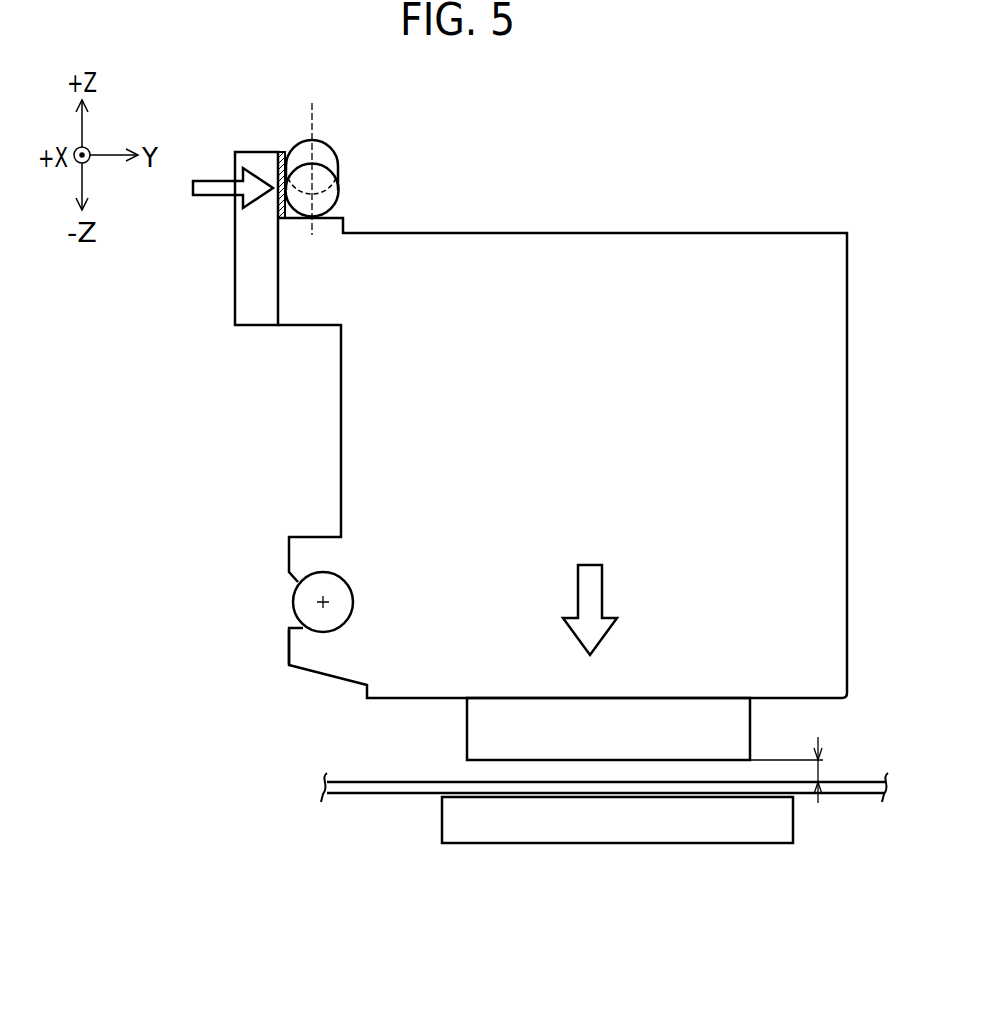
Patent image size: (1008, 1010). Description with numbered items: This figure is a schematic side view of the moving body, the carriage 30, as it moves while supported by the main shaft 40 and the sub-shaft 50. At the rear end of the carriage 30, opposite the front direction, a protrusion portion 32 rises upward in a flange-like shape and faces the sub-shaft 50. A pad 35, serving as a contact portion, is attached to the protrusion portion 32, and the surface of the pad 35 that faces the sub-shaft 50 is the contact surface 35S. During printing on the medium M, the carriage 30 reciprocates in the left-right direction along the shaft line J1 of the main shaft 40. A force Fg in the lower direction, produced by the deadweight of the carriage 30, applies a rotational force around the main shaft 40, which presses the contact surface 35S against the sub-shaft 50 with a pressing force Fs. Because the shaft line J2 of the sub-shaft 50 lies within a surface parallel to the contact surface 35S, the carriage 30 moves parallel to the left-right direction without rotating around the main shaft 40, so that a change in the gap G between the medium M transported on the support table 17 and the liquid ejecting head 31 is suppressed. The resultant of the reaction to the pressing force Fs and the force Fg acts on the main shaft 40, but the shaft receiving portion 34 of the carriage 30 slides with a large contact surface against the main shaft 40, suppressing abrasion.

The support table 17 is at (633, 843).
The carriage 30 is at (622, 240).
The liquid ejecting head 31 is at (751, 721).
The protrusion portion 32 is at (252, 216).
The shaft receiving portion 34 is at (297, 647).
The pad 35 is at (281, 153).
The contact surface 35S is at (287, 158).
The main shaft 40 is at (296, 594).
The sub-shaft 50 is at (339, 176).
The shaft line of the main shaft J1 is at (333, 601).
The shaft line of the sub-shaft J2 is at (320, 118).
The gap G is at (795, 759).
The medium M is at (365, 794).
The pressing force Fs is at (224, 177).
The force in the lower direction Fg is at (603, 610).